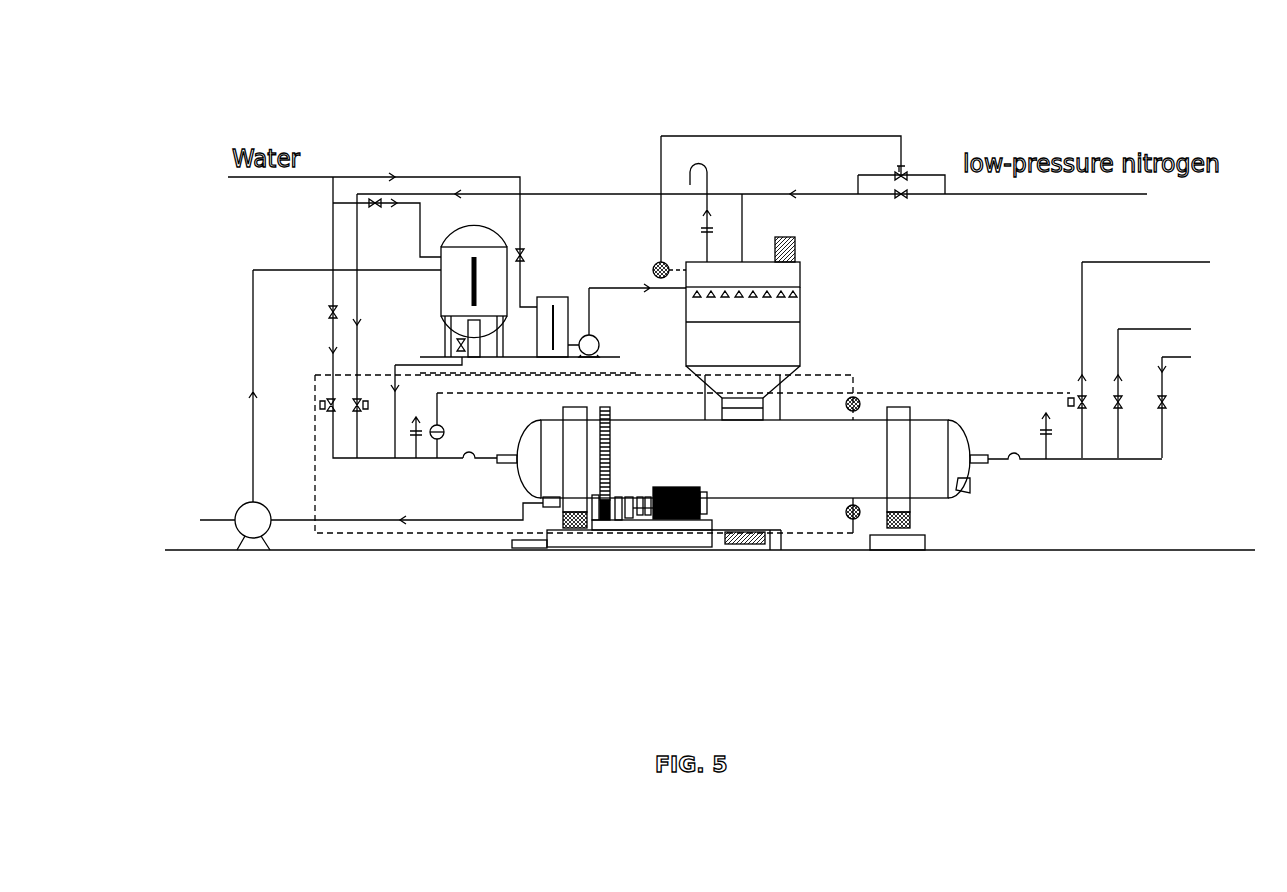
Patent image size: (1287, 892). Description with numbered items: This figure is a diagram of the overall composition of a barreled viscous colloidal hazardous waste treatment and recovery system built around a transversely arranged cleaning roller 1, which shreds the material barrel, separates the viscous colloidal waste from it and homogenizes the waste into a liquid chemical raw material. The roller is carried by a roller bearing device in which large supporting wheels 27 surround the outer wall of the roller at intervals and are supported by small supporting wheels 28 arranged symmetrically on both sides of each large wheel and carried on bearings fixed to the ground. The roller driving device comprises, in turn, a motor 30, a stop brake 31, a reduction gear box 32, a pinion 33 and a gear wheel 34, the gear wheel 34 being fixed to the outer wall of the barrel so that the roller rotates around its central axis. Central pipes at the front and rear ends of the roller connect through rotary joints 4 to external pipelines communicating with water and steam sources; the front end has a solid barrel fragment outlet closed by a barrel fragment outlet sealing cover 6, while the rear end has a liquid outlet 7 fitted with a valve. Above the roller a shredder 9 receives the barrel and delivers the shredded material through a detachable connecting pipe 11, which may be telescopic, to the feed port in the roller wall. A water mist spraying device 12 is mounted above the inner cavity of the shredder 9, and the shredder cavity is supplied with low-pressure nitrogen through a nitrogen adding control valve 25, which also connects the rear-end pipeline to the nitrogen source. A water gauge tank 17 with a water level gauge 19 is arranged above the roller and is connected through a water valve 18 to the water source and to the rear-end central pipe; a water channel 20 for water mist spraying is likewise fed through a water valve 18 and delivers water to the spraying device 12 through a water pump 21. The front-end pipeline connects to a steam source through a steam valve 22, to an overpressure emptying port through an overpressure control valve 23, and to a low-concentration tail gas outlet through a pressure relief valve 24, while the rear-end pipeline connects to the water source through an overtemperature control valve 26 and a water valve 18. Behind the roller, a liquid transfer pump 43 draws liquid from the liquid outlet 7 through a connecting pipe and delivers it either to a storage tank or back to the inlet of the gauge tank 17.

The cleaning roller 1 is at (760, 455).
The rotary joint 4 is at (470, 456).
The barrel fragment outlet sealing cover 6 is at (975, 484).
The liquid outlet 7 is at (545, 503).
The shredder 9 is at (775, 340).
The detachable connecting pipe 11 is at (750, 412).
The water mist spraying device 12 is at (800, 292).
The water gauge tank 17 is at (457, 268).
The water valve 18 is at (375, 198).
The water level gauge 19 is at (475, 262).
The water channel for water mist spraying 20 is at (566, 312).
The water pump 21 is at (597, 338).
The steam valve 22 is at (1168, 400).
The overpressure control valve 23 is at (1075, 400).
The pressure relief valve 24 is at (1122, 406).
The nitrogen adding control valve 25 is at (905, 178).
The overtemperature control valve 26 is at (352, 412).
The large supporting wheel 27 is at (575, 447).
The small supporting wheel 28 is at (576, 524).
The motor 30 is at (678, 519).
The stop brake 31 is at (641, 515).
The reduction gear box 32 is at (620, 518).
The pinion 33 is at (606, 522).
The gear wheel 34 is at (610, 452).
The liquid transfer pump 43 is at (250, 518).